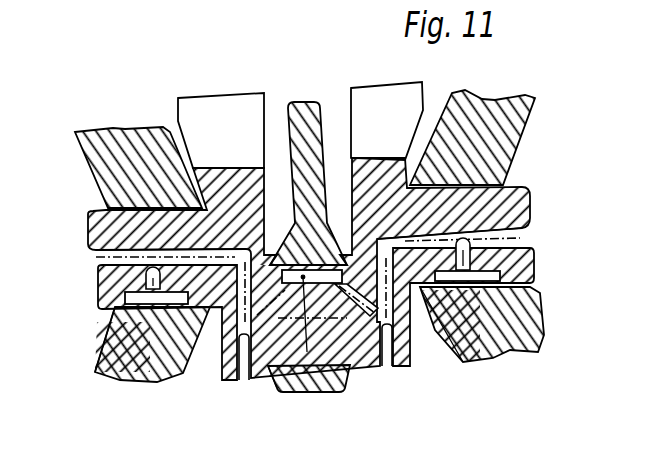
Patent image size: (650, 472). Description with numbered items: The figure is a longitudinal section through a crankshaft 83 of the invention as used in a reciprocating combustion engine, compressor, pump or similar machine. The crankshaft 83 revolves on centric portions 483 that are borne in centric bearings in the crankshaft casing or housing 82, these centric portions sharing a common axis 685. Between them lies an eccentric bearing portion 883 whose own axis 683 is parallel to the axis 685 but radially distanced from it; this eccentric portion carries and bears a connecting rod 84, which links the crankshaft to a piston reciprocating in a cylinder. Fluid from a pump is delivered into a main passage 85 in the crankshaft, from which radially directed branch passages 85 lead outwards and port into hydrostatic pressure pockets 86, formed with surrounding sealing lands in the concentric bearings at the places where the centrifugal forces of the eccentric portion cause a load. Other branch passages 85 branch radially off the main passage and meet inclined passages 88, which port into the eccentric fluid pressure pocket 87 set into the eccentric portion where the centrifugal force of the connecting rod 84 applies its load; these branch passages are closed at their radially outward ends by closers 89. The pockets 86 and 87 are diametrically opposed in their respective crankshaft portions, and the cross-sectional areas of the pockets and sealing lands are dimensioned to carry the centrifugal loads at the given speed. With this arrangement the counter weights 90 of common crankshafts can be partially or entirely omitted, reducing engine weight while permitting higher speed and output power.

The crankshaft casing 82 is at (124, 157).
The crankshaft 83 is at (98, 288).
The connecting rod 84 is at (303, 120).
The passage 85 is at (96, 257).
The hydrostatic pressure pocket 86 is at (117, 373).
The eccentric fluid pressure pocket 87 is at (282, 390).
The inclined passage 88 is at (220, 335).
The closer 89 is at (245, 383).
The counter weight 90 is at (240, 129).
The centric portion 483 is at (88, 214).
The axis of the eccentric bearing portion 683 is at (310, 393).
The axis of the centric portions 685 is at (90, 238).
The eccentric bearing portion 883 is at (333, 393).